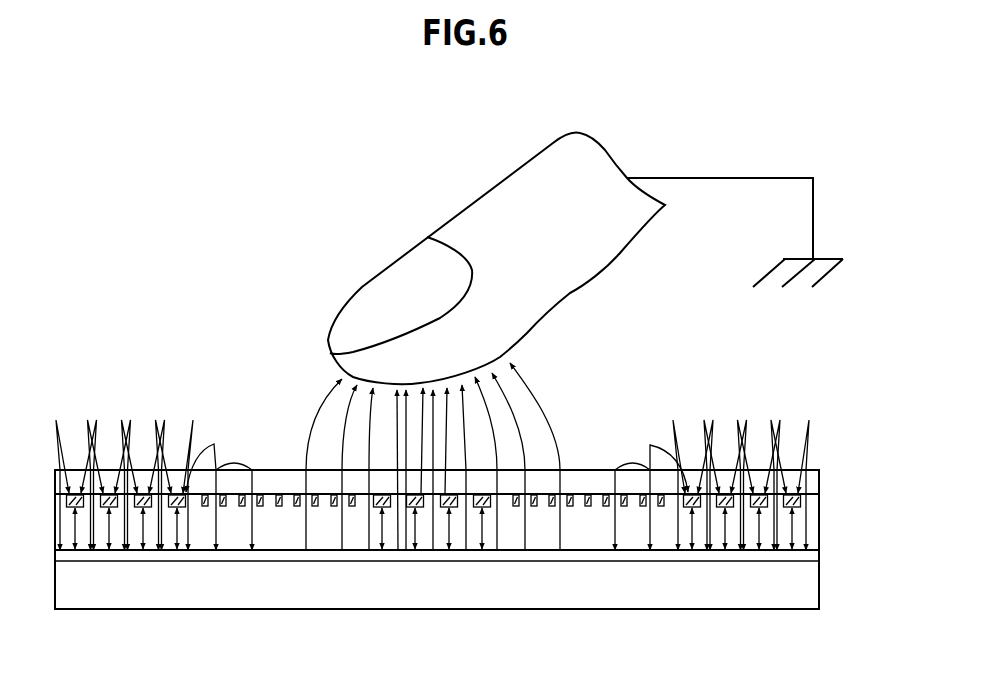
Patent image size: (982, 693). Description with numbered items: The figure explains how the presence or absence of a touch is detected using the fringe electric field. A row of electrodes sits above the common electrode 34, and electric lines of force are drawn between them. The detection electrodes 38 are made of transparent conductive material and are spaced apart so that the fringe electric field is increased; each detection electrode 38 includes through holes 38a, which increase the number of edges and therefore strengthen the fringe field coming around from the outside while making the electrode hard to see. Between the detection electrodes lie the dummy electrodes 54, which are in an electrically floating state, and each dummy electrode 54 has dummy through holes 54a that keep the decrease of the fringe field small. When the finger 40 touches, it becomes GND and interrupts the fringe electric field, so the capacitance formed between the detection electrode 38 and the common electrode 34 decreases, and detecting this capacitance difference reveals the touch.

The common electrode 34 is at (819, 555).
The detection electrode 38 is at (180, 505).
The through hole 38a is at (155, 505).
The finger 40 is at (497, 187).
The dummy electrode 54 is at (280, 505).
The dummy through hole 54a is at (285, 505).